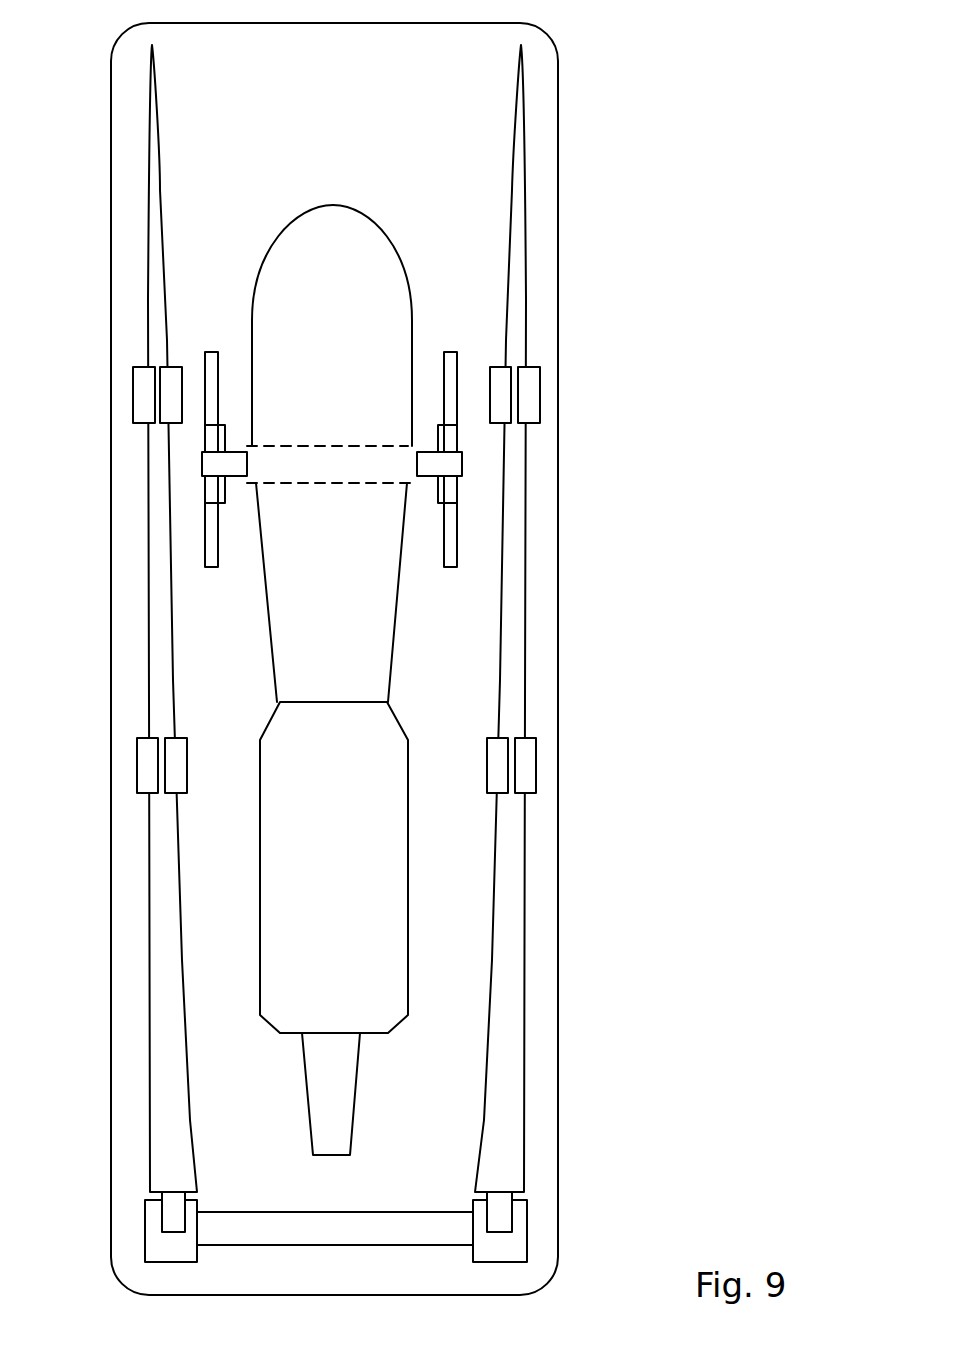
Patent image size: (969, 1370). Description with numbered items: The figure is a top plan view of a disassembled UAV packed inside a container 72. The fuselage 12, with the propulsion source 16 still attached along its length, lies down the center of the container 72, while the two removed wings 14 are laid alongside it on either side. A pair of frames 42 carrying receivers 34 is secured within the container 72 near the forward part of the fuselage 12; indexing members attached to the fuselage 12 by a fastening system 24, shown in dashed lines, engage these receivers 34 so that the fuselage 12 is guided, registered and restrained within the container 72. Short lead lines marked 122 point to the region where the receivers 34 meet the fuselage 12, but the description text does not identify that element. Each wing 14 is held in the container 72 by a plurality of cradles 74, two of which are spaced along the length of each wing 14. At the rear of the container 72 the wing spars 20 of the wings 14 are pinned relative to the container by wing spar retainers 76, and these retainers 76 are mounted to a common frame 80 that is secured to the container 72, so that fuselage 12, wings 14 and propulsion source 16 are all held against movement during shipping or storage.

The container 72 is at (557, 265).
The cradles 74 is at (177, 397).
The receivers 34 is at (243, 431).
The fastening system 24 is at (280, 445).
The connection lines 122 is at (430, 468).
The fuselage 12 is at (349, 606).
The frames 42 is at (229, 540).
The propulsion source 16 is at (357, 852).
The wings 14 is at (188, 1092).
The wing spars 20 is at (173, 1218).
The wing spar retainer 76 is at (163, 1250).
The common frame 80 is at (347, 1241).